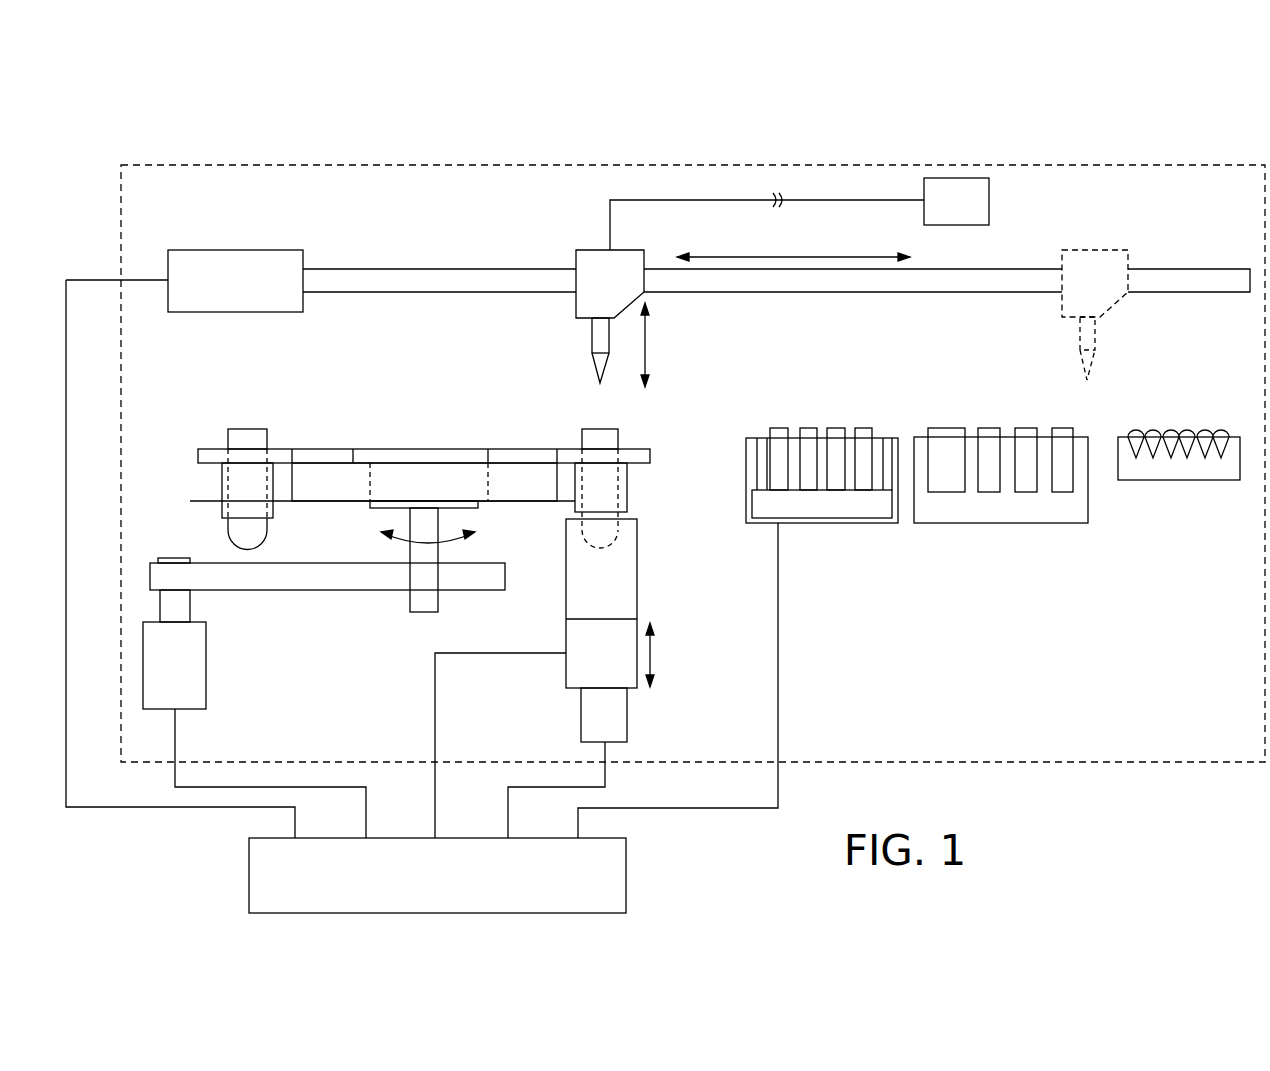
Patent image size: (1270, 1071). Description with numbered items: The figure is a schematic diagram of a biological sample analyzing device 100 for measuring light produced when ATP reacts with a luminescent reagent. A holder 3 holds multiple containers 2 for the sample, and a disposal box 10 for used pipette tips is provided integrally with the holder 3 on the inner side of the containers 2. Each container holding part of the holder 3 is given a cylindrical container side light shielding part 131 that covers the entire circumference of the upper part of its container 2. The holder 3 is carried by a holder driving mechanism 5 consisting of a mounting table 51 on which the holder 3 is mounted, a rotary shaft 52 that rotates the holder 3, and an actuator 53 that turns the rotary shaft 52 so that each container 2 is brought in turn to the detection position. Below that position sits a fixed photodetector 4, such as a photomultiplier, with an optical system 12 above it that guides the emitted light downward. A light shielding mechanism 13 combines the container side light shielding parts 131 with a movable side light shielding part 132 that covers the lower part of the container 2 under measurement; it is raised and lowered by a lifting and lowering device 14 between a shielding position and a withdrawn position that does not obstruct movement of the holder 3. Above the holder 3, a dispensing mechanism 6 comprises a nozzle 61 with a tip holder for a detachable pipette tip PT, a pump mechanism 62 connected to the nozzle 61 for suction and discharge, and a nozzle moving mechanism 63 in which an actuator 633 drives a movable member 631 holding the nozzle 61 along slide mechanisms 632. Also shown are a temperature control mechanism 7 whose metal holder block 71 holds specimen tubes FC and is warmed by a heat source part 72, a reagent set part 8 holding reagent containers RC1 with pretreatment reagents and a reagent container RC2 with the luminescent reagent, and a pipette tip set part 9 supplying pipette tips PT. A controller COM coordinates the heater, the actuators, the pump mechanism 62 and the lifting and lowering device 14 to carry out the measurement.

The sample analyzing device 100 is at (186, 133).
The dispensing mechanism 6 is at (658, 269).
The pump mechanism 62 is at (990, 200).
The nozzle moving mechanism 63 is at (658, 248).
The movable member 631 is at (576, 258).
The slide mechanisms 632 is at (436, 268).
The actuator 633 is at (235, 250).
The nozzle 61 is at (592, 336).
The containers 2 is at (247, 428).
The holder 3 is at (415, 448).
The disposal box 10 is at (537, 507).
The container side light shielding parts 131 is at (222, 491).
The light shielding mechanism 13 is at (634, 630).
The movable side light shielding part 132 is at (637, 583).
The optical system 12 is at (662, 609).
The lifting and lowering device 14 is at (627, 698).
The photodetector 4 is at (566, 677).
The holder driving mechanism 5 is at (324, 610).
The mounting table 51 is at (372, 508).
The rotary shaft 52 is at (408, 600).
The actuator 53 is at (236, 612).
The temperature control mechanism 7 is at (829, 503).
The holder block 71 is at (808, 498).
The heat source part 72 is at (875, 520).
The reagent set part 8 is at (1001, 480).
The pipette tip set part 9 is at (1178, 480).
The specimen tubes FC is at (864, 428).
The reagent containers RC1 is at (1060, 428).
The reagent container RC2 is at (947, 428).
The pipette tip PT is at (601, 384).
The controller COM is at (437, 915).